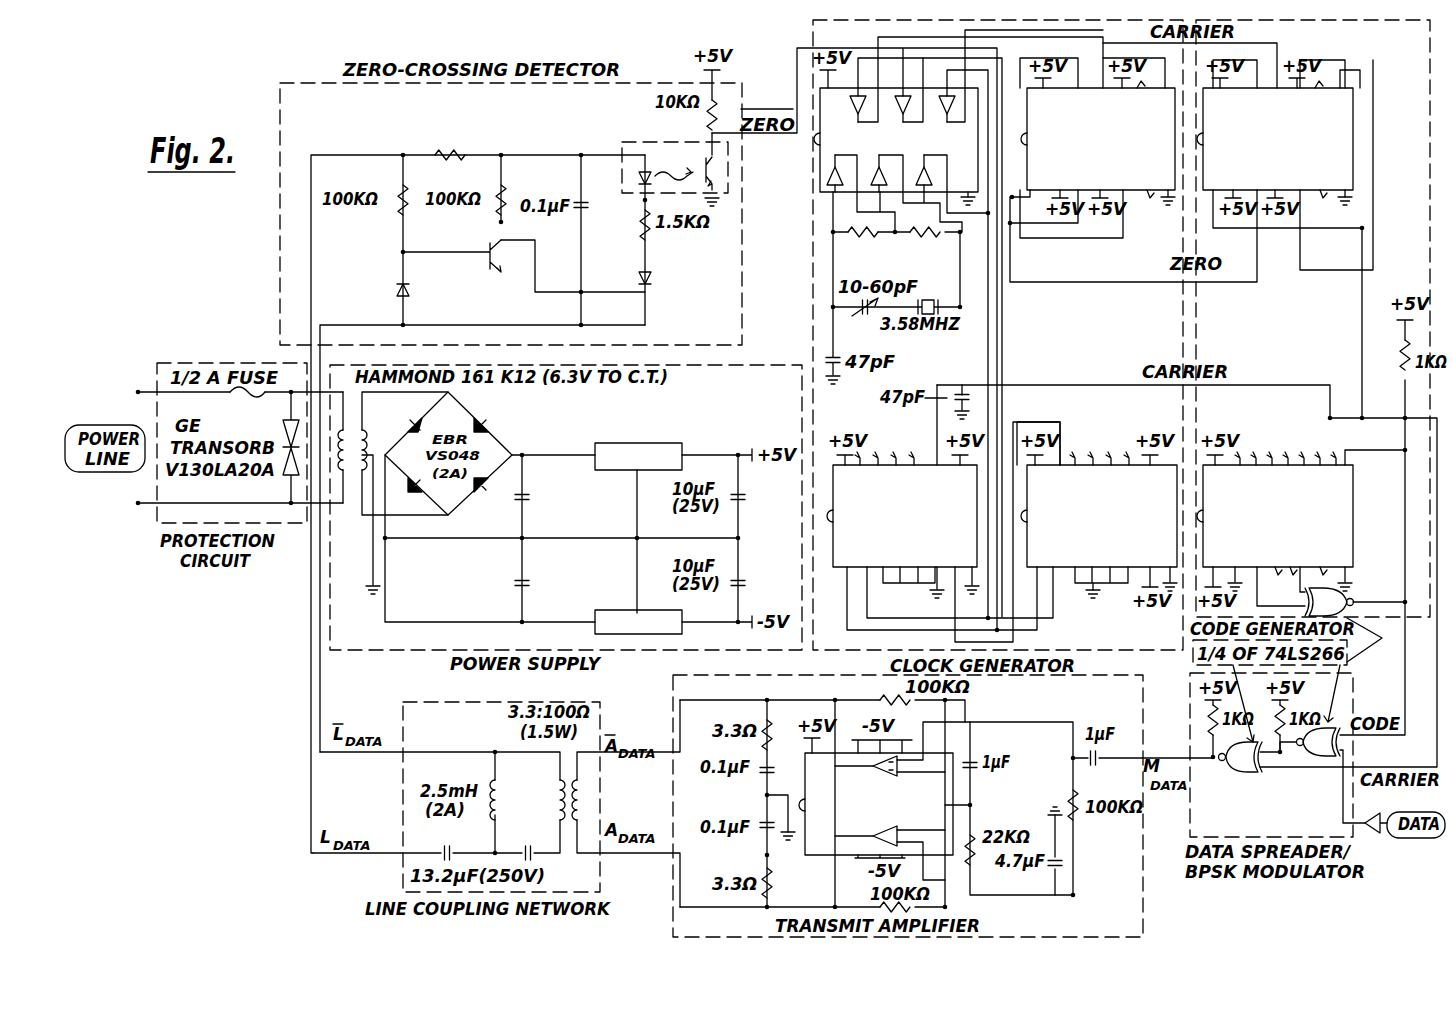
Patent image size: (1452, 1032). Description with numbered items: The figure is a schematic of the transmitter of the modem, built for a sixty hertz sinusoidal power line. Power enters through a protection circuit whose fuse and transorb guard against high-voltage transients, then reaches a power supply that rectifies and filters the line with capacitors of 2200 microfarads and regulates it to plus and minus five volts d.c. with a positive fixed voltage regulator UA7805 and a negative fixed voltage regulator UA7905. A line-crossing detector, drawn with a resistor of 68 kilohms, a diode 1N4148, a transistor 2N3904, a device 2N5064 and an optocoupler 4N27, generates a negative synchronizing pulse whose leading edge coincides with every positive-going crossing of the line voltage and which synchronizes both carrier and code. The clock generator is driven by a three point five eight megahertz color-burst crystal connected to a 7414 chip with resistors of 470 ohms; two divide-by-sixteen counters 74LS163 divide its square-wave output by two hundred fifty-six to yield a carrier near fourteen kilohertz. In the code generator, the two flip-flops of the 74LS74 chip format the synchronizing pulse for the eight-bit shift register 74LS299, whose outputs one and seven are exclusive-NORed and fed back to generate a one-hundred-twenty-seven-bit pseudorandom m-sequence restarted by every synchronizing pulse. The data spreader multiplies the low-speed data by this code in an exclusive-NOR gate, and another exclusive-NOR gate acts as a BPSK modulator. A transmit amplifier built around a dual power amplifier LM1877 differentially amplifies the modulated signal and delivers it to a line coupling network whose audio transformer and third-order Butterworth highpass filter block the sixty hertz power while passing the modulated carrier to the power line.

The hex Schmitt-trigger inverter 7414 is at (896, 140).
The flip-flop chip 74LS74 is at (1187, 139).
The divide-by-16 counters 74LS163 is at (1002, 516).
The shift register 74LS299 is at (1275, 516).
The dual power amplifier LM1877 is at (876, 804).
The positive fixed voltage regulator UA7805 is at (638, 456).
The negative fixed voltage regulator UA7905 is at (638, 622).
The optocoupler 4N27 is at (675, 155).
The transistor 2N3904 is at (452, 258).
The SCR 2N5064 is at (687, 277).
The diode 1N4148 is at (369, 294).
The 68 kilohm resistor 68 is at (455, 142).
The 470 ohm resistors 470 is at (896, 241).
The 2200 microfarad capacitors 2200 is at (562, 536).